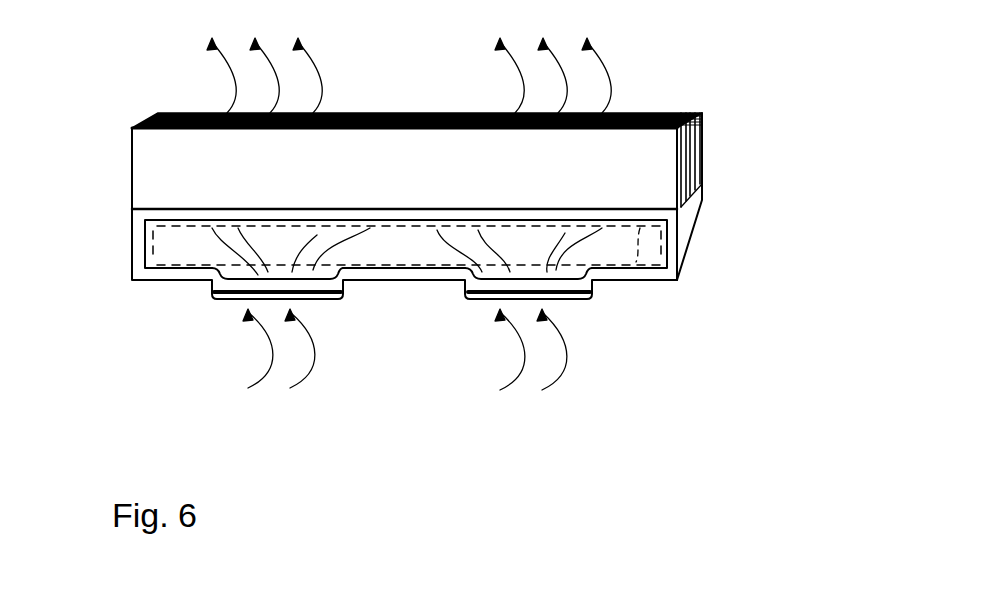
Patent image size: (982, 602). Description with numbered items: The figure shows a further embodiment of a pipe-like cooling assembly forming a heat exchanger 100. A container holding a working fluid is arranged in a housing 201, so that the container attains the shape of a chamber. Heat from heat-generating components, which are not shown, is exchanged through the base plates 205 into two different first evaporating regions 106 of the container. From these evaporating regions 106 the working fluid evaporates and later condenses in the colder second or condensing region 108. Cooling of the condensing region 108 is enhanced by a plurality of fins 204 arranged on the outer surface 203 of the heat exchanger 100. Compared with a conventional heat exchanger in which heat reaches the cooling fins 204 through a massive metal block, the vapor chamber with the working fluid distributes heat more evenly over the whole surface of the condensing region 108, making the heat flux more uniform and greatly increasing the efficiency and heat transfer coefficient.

The heat exchanger 100 is at (107, 174).
The second or condensing region 108 is at (383, 220).
The fins 204 is at (697, 157).
The outer surface 203 is at (600, 210).
The housing 201 is at (690, 215).
The first evaporating regions 106 is at (498, 272).
The base plate 205 is at (230, 296).